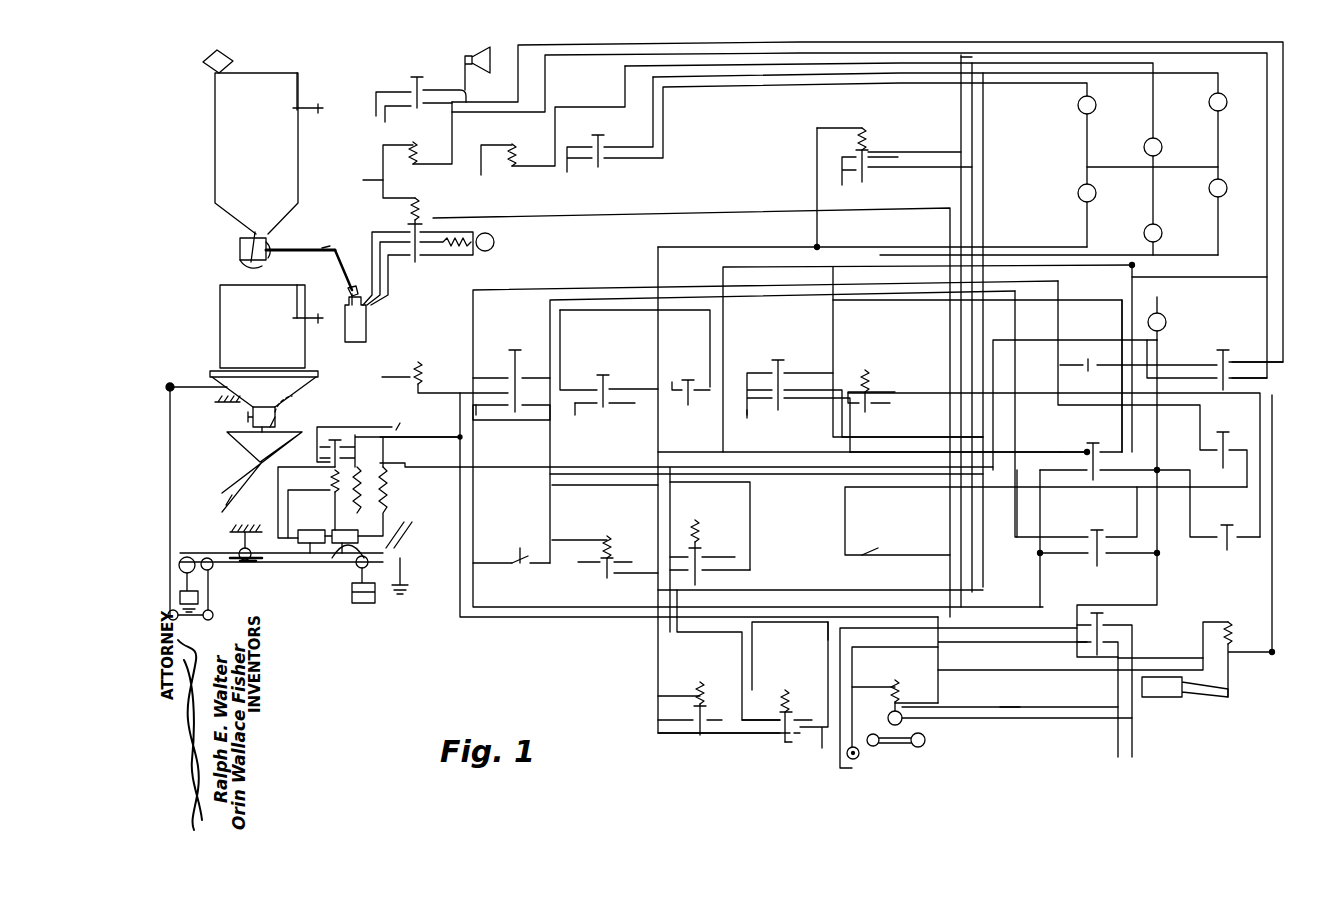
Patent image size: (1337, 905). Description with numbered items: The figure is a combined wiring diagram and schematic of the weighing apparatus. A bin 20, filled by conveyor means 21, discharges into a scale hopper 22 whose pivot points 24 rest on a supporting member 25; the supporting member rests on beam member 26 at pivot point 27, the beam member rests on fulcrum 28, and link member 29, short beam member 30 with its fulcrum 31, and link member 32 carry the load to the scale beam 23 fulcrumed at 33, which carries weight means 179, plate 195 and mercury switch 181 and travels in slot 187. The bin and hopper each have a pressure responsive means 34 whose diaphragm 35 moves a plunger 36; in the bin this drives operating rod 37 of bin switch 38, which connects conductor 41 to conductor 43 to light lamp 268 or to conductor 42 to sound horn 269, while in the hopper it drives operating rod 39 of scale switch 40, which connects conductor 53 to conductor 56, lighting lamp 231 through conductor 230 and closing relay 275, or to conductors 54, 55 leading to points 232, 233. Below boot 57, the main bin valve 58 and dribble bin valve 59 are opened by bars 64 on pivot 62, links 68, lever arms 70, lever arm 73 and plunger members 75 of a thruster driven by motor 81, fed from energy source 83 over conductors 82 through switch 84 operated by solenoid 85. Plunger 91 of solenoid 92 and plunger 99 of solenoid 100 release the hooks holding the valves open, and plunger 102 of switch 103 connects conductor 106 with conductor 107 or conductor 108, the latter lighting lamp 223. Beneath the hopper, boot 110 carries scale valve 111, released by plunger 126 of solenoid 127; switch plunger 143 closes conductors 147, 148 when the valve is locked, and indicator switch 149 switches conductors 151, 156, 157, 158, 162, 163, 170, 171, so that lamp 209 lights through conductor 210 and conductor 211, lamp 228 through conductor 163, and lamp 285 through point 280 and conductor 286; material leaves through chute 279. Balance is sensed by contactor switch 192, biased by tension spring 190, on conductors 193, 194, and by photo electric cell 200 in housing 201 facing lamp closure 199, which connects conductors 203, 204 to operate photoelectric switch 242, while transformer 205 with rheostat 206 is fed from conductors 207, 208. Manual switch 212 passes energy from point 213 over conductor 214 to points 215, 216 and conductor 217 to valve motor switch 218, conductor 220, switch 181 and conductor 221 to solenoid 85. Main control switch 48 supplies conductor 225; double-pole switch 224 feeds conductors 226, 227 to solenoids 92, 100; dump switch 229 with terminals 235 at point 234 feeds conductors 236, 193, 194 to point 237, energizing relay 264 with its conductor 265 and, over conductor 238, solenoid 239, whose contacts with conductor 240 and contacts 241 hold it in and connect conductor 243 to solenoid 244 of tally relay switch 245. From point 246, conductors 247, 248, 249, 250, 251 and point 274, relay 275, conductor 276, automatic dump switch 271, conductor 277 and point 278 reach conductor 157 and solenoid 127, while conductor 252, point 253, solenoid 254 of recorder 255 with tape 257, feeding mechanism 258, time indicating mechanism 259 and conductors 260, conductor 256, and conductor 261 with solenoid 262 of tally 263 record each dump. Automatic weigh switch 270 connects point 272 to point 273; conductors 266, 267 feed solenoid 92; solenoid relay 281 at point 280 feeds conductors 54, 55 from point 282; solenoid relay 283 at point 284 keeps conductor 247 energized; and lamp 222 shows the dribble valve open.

The hopper 20 is at (218, 157).
The tag 21 is at (206, 66).
The hopper 22 is at (220, 318).
The pipe 23 is at (286, 565).
The shelf 24 is at (210, 373).
The funnel 25 is at (310, 380).
The pivot 26 is at (200, 390).
The arc path 27 is at (283, 402).
The support 28 is at (218, 406).
The linkage rod 29 is at (170, 448).
The rollers 30 is at (176, 618).
The valve 31 is at (180, 596).
The roller 32 is at (218, 570).
The arm 33 is at (250, 565).
The bracket 34 is at (300, 95).
The plate 35 is at (293, 100).
The stop 36 is at (318, 215).
The relay 37 is at (412, 82).
The contact 38 is at (398, 112).
The relay 39 is at (768, 368).
The contacts 40 is at (765, 400).
The contact 41 is at (378, 98).
The wire 42 is at (452, 94).
The wire 43 is at (486, 100).
The relay 48 is at (1110, 618).
The terminal 53 is at (748, 418).
The bus wire 54 is at (958, 132).
The bus wire 55 is at (970, 178).
The contact 56 is at (798, 372).
The valve plate 57 is at (270, 242).
The valve housing 58 is at (242, 254).
The valve 59 is at (238, 246).
The valve stem 62 is at (258, 238).
The lever 64 is at (272, 248).
The lever end 68 is at (317, 239).
The link 70 is at (335, 268).
The pivot 73 is at (348, 283).
The plunger 75 is at (350, 295).
The solenoid 81 is at (347, 306).
The wires 82 is at (384, 230).
The motor 83 is at (496, 242).
The relay 84 is at (418, 262).
The coil 85 is at (420, 214).
The coil 91 is at (512, 143).
The wire 92 is at (515, 158).
The coil 99 is at (413, 141).
The wire 100 is at (416, 156).
The relay 102 is at (600, 138).
The relay armature 103 is at (590, 132).
The terminal 106 is at (574, 170).
The wire 107 is at (642, 160).
The wire 108 is at (640, 147).
The nozzle 110 is at (268, 403).
The outlet 111 is at (264, 434).
The coil 126 is at (430, 361).
The wire 127 is at (428, 380).
The relay 143 is at (684, 378).
The contact 147 is at (674, 392).
The contact 148 is at (706, 392).
The relay 149 is at (520, 350).
The contact 151 is at (488, 376).
The wire 156 is at (870, 300).
The wire 157 is at (806, 306).
The wire 158 is at (476, 392).
The terminal 162 is at (494, 420).
The wire 163 is at (536, 406).
The contact 170 is at (630, 384).
The contact 171 is at (624, 392).
The weight 179 is at (366, 604).
The switch 181 is at (230, 550).
The loop 187 is at (359, 547).
The ground 190 is at (404, 566).
The switch 192 is at (400, 548).
The contact 193 is at (490, 562).
The contact 194 is at (530, 565).
The link 195 is at (330, 567).
The solenoid 199 is at (342, 531).
The solenoid 200 is at (308, 527).
The plunger 201 is at (320, 565).
The wire 203 is at (284, 508).
The wire 204 is at (278, 512).
The resistor 205 is at (382, 497).
The resistor 206 is at (392, 517).
The wire 207 is at (330, 426).
The wire 208 is at (422, 436).
The lamp 209 is at (1220, 190).
The wire 210 is at (786, 268).
The wire 211 is at (1088, 148).
The contact 212 is at (1104, 360).
The wire 213 is at (1128, 268).
The wire 214 is at (1134, 306).
The wire 215 is at (1156, 364).
The wire 216 is at (1056, 365).
The wire 217 is at (1058, 408).
The relay 218 is at (1226, 444).
The wire 220 is at (238, 585).
The wire 221 is at (278, 585).
The lamp 222 is at (1092, 106).
The lamp 223 is at (1222, 102).
The relay 224 is at (1224, 352).
The wire 225 is at (1158, 438).
The wire 226 is at (612, 82).
The wire 227 is at (578, 62).
The lamp 228 is at (1158, 318).
The contact 229 is at (1086, 452).
The wire 230 is at (834, 340).
The lamp 231 is at (1160, 236).
The wire 232 is at (955, 64).
The wire 233 is at (970, 50).
The contact 234 is at (1162, 470).
The contact 235 is at (1086, 474).
The wire 236 is at (566, 606).
The wire 237 is at (552, 538).
The wire 238 is at (552, 508).
The relay 239 is at (712, 534).
The wire 240 is at (496, 470).
The relay 241 is at (336, 462).
The coil 242 is at (342, 494).
The wire 243 is at (664, 582).
The coil 244 is at (790, 690).
The relay 245 is at (776, 744).
The wire 246 is at (984, 78).
The wire 247 is at (985, 178).
The wire 248 is at (716, 740).
The wire 249 is at (806, 646).
The wire 250 is at (1024, 450).
The relay 251 is at (1104, 438).
The wire 252 is at (458, 550).
The wire 253 is at (940, 670).
The coil 254 is at (902, 673).
The roller 255 is at (900, 750).
The wire 256 is at (866, 660).
The arm 257 is at (906, 732).
The pivot 258 is at (858, 756).
The plunger 259 is at (886, 716).
The wire 260 is at (1040, 718).
The wire 261 is at (1012, 672).
The coil 262 is at (1230, 626).
The counter 263 is at (1174, 702).
The relay 264 is at (610, 538).
The wire 265 is at (700, 450).
The relay 266 is at (742, 718).
The wire 267 is at (954, 574).
The lamp 268 is at (1154, 144).
The horn 269 is at (488, 60).
The relay 270 is at (1098, 536).
The relay 271 is at (1224, 526).
The junction 272 is at (1160, 555).
The junction 273 is at (1040, 553).
The junction 274 is at (832, 456).
The relay 275 is at (866, 404).
The wire 276 is at (1034, 391).
The wire 277 is at (1186, 512).
The contact 278 is at (1110, 461).
The chute 279 is at (244, 480).
The junction 280 is at (814, 246).
The relay 281 is at (866, 128).
The contacts 282 is at (842, 180).
The relay 283 is at (690, 684).
The wire 284 is at (656, 697).
The lamp 285 is at (1078, 196).
The wire 286 is at (1040, 246).